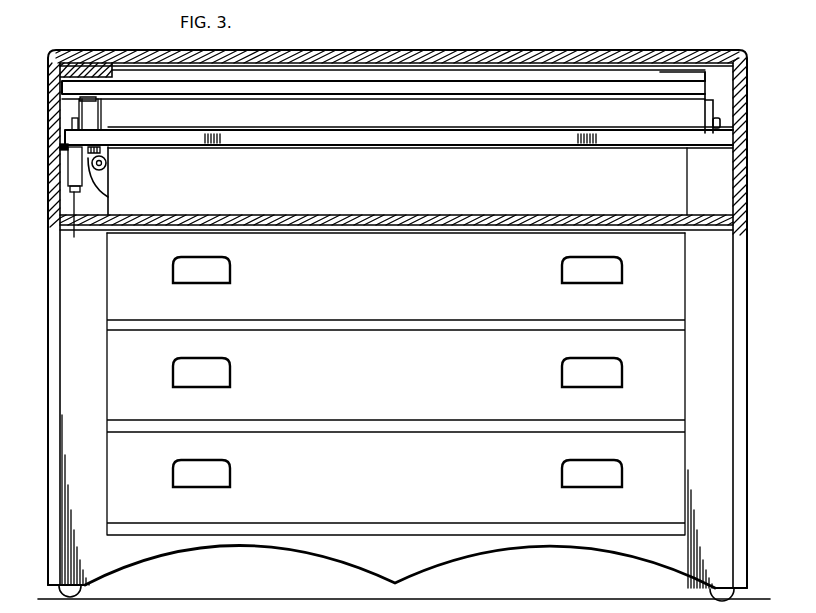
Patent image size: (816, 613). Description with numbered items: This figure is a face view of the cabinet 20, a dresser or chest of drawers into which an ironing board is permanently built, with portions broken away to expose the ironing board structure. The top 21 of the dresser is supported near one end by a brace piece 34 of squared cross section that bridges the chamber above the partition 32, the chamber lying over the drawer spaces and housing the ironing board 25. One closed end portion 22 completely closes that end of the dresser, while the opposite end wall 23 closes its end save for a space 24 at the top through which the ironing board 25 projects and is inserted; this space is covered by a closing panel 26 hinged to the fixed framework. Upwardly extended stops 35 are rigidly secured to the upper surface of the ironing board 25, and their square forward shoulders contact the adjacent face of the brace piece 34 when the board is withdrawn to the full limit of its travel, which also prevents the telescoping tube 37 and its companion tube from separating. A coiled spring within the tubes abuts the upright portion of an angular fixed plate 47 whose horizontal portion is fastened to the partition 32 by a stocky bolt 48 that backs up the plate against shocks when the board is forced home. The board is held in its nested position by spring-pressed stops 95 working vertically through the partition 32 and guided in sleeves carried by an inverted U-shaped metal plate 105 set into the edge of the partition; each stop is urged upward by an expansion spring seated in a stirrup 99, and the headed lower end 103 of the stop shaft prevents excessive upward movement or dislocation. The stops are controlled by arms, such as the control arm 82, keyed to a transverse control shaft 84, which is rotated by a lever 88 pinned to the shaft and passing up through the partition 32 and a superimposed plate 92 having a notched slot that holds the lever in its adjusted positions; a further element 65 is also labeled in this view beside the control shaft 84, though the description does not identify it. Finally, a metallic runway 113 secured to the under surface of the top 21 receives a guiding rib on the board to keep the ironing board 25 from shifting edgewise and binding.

The cabinet 20 is at (397, 417).
The top 21 is at (552, 58).
The closed end portion 22 is at (702, 181).
The end wall 23 is at (96, 181).
The space 24 is at (62, 113).
The ironing board 25 is at (397, 95).
The closing panel 26 is at (52, 96).
The partition 32 is at (334, 140).
The brace piece 34 is at (80, 70).
The stop 35 is at (690, 78).
The tube 37 is at (495, 127).
The angular fixed plate 47 is at (713, 105).
The bolt 48 is at (720, 125).
The pin block 65 is at (100, 152).
The control arm 82 is at (115, 188).
The control shaft 84 is at (107, 163).
The lever 88 is at (103, 113).
The superimposed plate 92 is at (108, 130).
The stop 95 is at (73, 124).
The stirrup 99 is at (72, 170).
The head 103 is at (89, 226).
The inverted U-shaped metal plate 105 is at (60, 147).
The metallic runway 113 is at (672, 73).